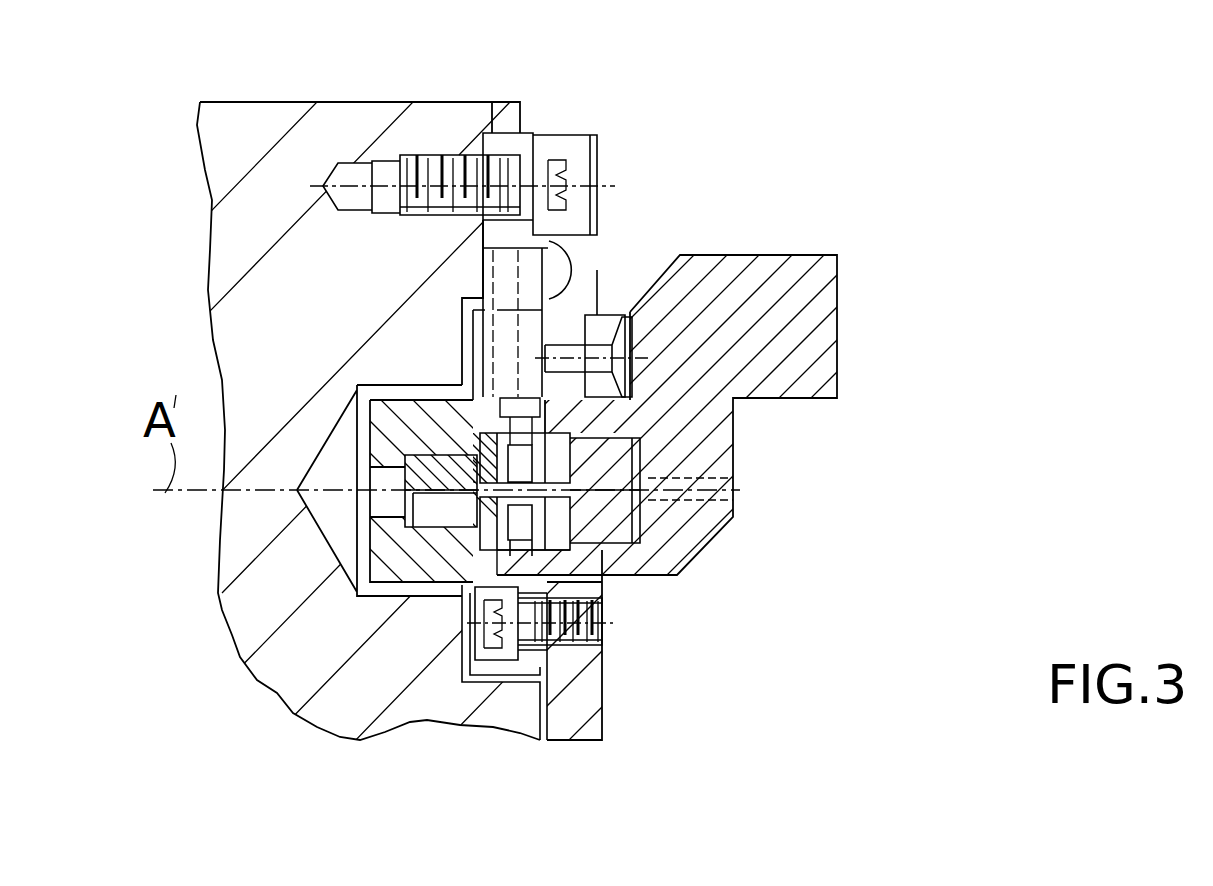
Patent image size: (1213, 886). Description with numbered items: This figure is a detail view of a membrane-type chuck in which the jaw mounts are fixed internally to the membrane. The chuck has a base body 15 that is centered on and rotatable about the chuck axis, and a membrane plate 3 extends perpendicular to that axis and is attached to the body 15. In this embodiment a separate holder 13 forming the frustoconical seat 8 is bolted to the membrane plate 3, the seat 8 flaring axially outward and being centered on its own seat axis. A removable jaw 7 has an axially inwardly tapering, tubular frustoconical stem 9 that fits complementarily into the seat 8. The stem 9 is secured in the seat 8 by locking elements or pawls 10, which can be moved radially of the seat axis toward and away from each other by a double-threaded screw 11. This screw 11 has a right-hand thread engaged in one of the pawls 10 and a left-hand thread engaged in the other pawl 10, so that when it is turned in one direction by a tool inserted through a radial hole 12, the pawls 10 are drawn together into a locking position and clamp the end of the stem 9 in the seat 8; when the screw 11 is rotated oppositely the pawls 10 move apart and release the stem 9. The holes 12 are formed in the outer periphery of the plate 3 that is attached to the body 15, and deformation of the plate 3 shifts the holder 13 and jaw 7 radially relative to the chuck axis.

The membrane plate 3 is at (590, 705).
The removable jaw 7 is at (803, 318).
The frustoconical seat 8 is at (615, 578).
The frustoconical stem 9 is at (632, 308).
The locking pawl 10 is at (570, 507).
The double-threaded screw 11 is at (642, 537).
The radial hole 12 is at (513, 300).
The separate holder 13 is at (356, 594).
The base body 15 is at (318, 702).